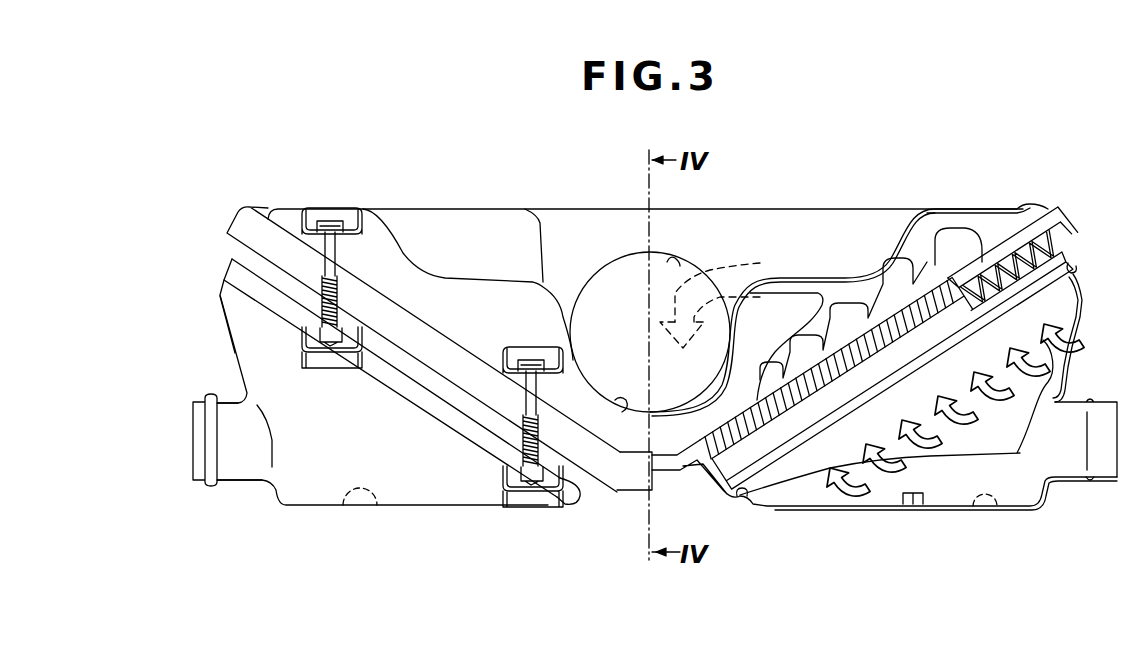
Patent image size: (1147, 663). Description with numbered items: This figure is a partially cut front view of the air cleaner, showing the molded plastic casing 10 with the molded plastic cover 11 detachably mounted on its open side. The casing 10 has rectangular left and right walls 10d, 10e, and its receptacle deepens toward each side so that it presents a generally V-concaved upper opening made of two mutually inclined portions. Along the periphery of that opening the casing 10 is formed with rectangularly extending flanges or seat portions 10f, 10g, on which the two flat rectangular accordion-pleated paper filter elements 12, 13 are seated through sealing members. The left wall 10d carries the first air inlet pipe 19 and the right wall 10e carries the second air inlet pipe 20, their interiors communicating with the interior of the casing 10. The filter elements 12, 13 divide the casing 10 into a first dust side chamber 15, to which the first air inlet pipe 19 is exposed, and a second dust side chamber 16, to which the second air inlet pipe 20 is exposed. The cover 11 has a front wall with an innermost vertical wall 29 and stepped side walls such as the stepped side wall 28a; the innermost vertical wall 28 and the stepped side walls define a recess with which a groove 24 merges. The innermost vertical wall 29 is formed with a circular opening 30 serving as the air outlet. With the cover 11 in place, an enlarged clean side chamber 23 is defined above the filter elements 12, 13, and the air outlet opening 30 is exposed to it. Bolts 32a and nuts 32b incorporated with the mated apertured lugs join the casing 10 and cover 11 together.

The casing 10 is at (480, 508).
The left wall 10d is at (226, 341).
The right wall 10e is at (1073, 348).
The flange or seat portion 10f is at (230, 258).
The flange or seat portion 10g is at (740, 500).
The cover 11 is at (472, 208).
The paper filter element 12 is at (460, 373).
The paper filter element 13 is at (1054, 258).
The first dust side chamber 15 is at (352, 503).
The second dust side chamber 16 is at (974, 496).
The first air inlet pipe 19 is at (240, 483).
The second air inlet pipe 20 is at (1071, 481).
The clean side chamber 23 is at (798, 292).
The groove 24 is at (623, 412).
The innermost vertical wall 28 is at (444, 278).
The stepped side wall 28a is at (400, 238).
The innermost vertical wall 29 is at (590, 233).
The circular opening 30 is at (681, 259).
The bolt 32a is at (328, 220).
The nut 32b is at (330, 344).